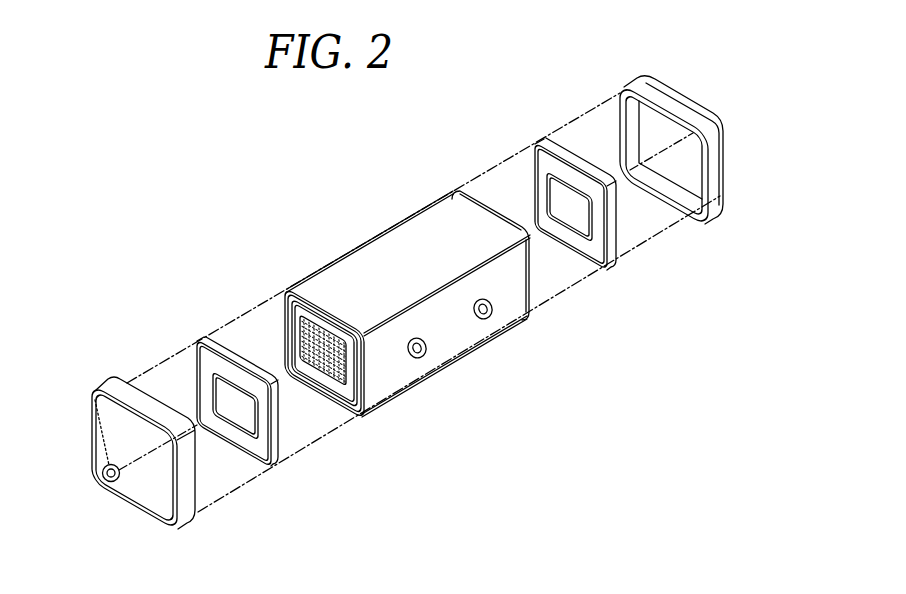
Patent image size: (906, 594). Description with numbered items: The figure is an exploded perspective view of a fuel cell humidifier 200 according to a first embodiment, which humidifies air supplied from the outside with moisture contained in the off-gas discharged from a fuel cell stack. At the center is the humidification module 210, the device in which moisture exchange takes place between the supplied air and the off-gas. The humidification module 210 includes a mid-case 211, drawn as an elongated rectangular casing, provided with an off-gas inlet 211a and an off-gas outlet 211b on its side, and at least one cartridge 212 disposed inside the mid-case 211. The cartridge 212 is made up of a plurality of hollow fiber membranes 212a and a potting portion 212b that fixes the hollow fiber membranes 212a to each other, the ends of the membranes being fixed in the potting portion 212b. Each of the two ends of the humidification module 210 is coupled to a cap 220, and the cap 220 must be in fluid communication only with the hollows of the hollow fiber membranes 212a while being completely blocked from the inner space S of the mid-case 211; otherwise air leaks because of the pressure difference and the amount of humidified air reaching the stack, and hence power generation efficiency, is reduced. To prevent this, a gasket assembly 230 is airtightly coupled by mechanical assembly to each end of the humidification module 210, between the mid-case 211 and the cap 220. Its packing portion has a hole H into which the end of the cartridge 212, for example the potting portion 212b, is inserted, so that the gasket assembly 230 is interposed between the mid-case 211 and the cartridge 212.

The fuel cell humidifier 200 is at (431, 96).
The humidification module 210 is at (405, 361).
The mid-case 211 is at (405, 317).
The off-gas inlet 211a is at (420, 358).
The off-gas outlet 211b is at (485, 320).
The cartridge 212 is at (344, 435).
The hollow fiber membranes 212a is at (315, 368).
The potting portion 212b is at (343, 382).
The cap 220 is at (110, 382).
The gasket assembly 230 is at (387, 297).
The hole H is at (238, 408).
The inner space S is at (300, 308).